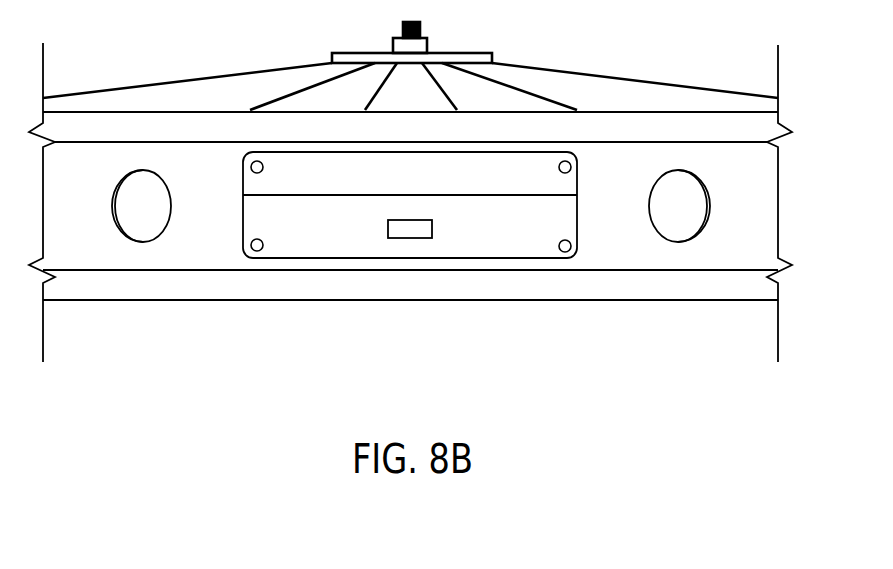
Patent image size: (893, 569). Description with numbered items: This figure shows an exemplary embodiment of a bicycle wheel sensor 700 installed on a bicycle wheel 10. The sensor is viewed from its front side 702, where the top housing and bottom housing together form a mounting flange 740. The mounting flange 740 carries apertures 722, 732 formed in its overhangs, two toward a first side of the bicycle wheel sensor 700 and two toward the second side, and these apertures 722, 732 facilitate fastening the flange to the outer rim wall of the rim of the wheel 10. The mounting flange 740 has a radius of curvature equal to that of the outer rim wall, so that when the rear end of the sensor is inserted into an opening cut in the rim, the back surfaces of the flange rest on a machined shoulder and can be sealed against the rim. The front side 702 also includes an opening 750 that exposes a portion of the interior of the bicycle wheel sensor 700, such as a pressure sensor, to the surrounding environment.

The bicycle wheel 10 is at (512, 340).
The bicycle wheel sensor 700 is at (318, 233).
The front side 702 is at (522, 173).
The aperture 722 is at (568, 166).
The aperture 732 is at (568, 245).
The mounting flange 740 is at (508, 220).
The opening 750 is at (406, 232).